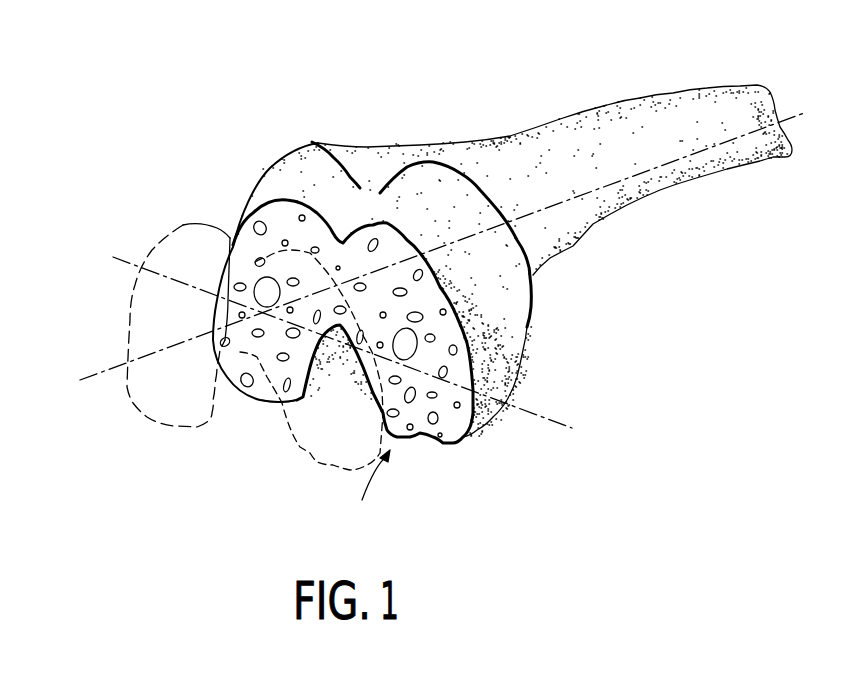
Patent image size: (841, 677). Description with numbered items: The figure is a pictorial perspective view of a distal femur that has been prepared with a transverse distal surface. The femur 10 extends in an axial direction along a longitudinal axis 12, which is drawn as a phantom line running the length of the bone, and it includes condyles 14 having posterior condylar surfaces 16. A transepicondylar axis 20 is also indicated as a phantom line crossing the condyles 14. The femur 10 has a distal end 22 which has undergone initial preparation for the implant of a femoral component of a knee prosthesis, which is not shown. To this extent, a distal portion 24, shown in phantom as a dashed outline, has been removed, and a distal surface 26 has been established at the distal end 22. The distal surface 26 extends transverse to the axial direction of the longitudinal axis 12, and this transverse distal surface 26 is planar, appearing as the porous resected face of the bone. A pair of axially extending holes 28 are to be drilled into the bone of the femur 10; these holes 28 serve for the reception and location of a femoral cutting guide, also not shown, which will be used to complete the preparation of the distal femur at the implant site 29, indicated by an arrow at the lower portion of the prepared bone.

The femur 10 is at (676, 87).
The longitudinal axis 12 is at (90, 372).
The condyles 14 is at (240, 352).
The posterior condylar surfaces 16 is at (258, 403).
The transepicondylar axis 20 is at (115, 257).
The distal end 22 is at (315, 142).
The distal portion 24 is at (110, 425).
The distal surface 26 is at (428, 433).
The axially extending holes 28 is at (262, 288).
The implant site 29 is at (361, 488).